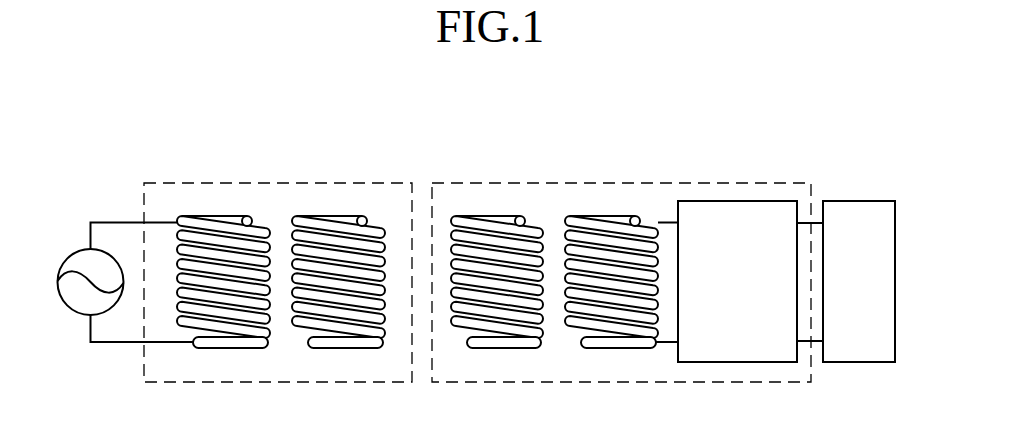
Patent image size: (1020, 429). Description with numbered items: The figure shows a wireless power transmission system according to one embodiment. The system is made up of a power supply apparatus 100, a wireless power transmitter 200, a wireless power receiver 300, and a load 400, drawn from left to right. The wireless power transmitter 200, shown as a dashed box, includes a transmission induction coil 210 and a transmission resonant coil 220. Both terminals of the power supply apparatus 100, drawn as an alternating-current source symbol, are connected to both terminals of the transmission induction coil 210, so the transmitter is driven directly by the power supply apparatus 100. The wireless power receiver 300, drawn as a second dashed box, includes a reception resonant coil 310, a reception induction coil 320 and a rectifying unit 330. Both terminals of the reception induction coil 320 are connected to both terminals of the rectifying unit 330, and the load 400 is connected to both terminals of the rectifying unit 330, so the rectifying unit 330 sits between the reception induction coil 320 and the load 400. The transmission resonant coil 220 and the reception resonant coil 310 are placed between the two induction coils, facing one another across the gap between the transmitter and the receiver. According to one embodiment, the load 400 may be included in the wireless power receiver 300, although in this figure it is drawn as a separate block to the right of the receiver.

The power supply apparatus 100 is at (65, 257).
The wireless power transmitter 200 is at (167, 182).
The transmission induction coil 210 is at (237, 233).
The transmission resonant coil 220 is at (338, 228).
The wireless power receiver 300 is at (550, 182).
The reception resonant coil 310 is at (491, 228).
The reception induction coil 320 is at (620, 230).
The rectifying unit 330 is at (712, 201).
The load 400 is at (858, 201).